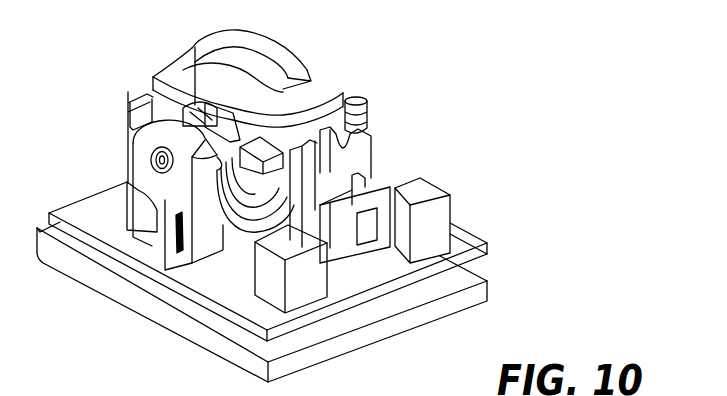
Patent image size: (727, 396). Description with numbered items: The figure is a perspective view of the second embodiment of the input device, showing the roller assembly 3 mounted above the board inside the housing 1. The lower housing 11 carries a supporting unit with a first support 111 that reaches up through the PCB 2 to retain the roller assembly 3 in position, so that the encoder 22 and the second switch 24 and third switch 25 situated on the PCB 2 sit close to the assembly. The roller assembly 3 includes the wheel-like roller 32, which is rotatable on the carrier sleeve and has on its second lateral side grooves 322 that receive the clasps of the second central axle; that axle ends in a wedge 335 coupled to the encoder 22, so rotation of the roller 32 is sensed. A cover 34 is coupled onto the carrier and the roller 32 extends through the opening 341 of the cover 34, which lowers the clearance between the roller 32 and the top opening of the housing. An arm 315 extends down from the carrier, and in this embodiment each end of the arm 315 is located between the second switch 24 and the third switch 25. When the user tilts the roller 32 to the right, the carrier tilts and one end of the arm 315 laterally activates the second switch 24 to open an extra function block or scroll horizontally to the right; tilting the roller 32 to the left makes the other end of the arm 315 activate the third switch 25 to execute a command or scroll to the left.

The housing 1 is at (300, 230).
The lower housing 11 is at (303, 340).
The first support 111 is at (140, 98).
The PCB 2 is at (467, 235).
The encoder 22 is at (165, 270).
The second switch 24 is at (428, 195).
The third switch 25 is at (282, 247).
The roller assembly 3 is at (274, 116).
The roller 32 is at (274, 61).
The grooves 322 is at (193, 48).
The cover 34 is at (327, 85).
The opening 341 is at (313, 75).
The arm 315 is at (380, 237).
The wedge 335 is at (151, 163).